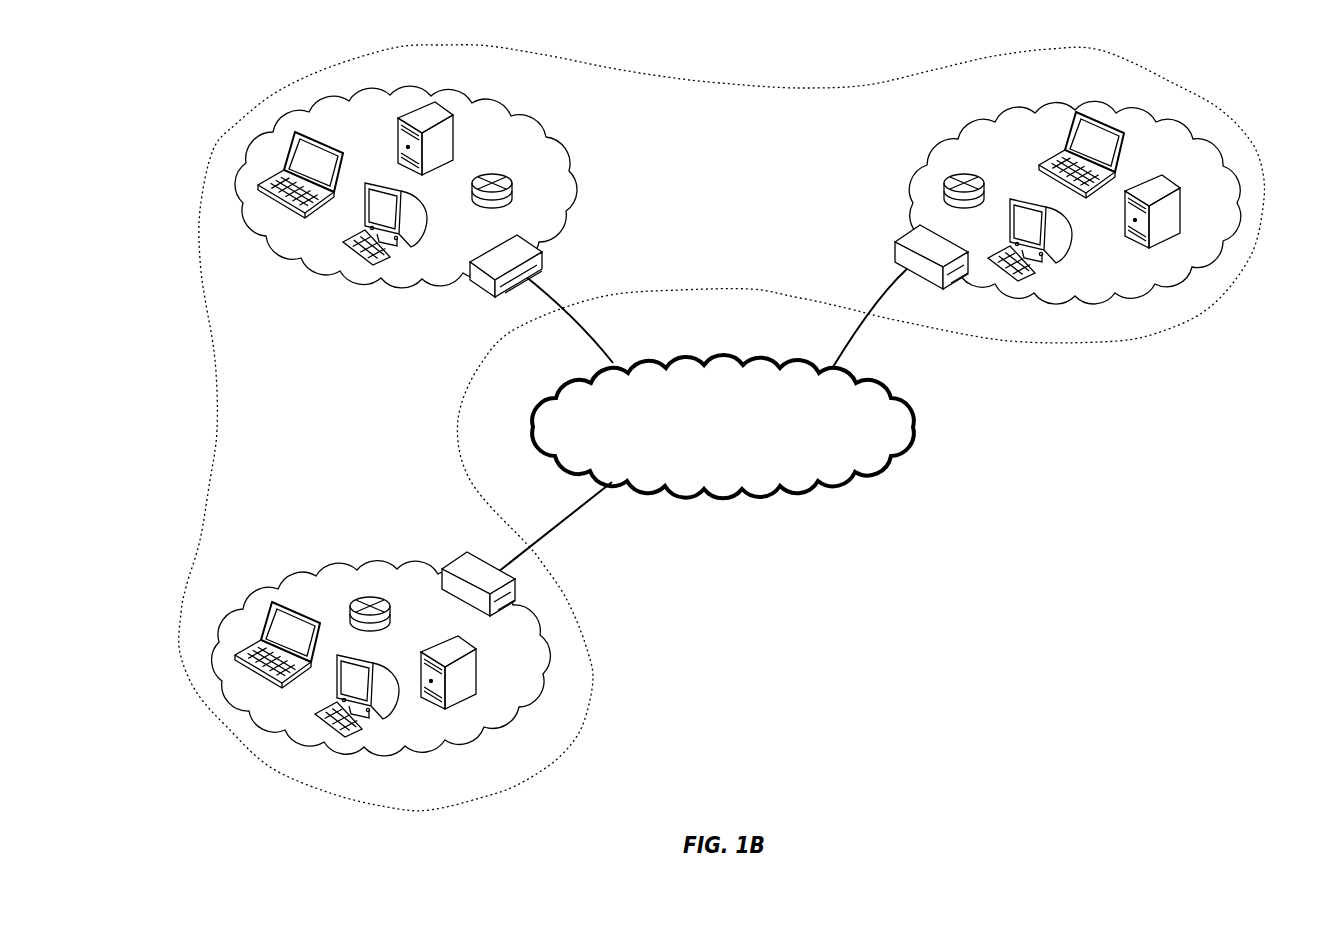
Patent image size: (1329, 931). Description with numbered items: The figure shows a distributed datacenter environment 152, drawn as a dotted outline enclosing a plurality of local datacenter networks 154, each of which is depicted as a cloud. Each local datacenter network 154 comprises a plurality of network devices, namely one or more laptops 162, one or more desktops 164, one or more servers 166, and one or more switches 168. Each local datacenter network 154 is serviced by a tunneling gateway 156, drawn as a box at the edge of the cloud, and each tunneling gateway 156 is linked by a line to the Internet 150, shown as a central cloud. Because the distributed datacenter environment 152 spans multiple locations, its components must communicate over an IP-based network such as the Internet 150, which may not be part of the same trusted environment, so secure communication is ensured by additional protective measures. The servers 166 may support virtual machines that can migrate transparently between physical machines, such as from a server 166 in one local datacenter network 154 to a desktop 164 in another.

The Internet 150 is at (739, 447).
The distributed datacenter environment 152 is at (1257, 137).
The local datacenter network 154 is at (937, 145).
The tunneling gateway 156 is at (897, 240).
The laptop 162 is at (317, 150).
The desktop 164 is at (412, 236).
The server 166 is at (452, 134).
The switch 168 is at (509, 190).